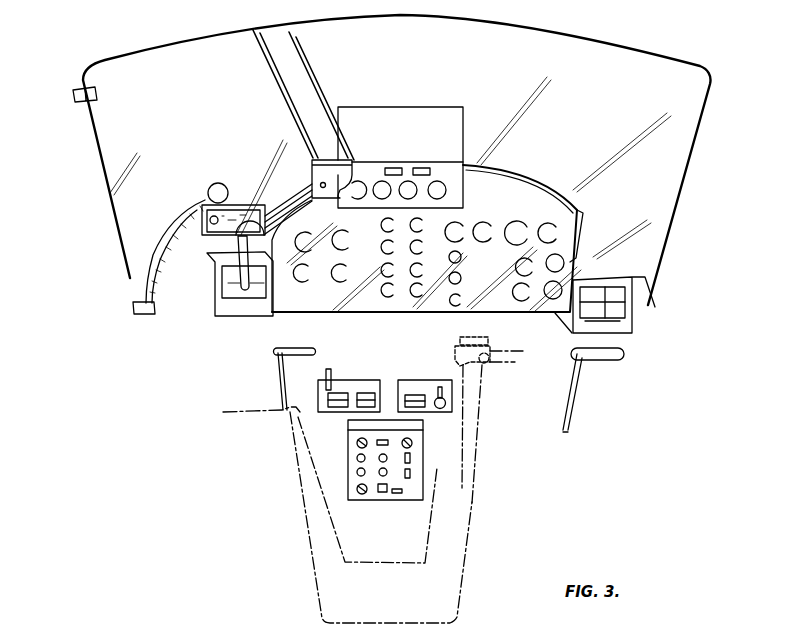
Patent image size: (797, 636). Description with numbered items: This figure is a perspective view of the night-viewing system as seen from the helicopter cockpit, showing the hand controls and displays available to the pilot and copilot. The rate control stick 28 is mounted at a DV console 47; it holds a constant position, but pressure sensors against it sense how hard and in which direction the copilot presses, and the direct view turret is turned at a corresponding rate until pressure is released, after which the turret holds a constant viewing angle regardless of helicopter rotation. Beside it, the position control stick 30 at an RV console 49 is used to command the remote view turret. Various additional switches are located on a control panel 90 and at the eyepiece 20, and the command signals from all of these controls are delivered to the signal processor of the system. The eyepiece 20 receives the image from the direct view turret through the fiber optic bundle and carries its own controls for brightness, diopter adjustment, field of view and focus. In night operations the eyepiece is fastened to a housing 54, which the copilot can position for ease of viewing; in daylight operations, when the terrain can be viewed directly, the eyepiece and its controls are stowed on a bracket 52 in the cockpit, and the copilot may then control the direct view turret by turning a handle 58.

The eyepiece 20 is at (172, 217).
The rate control stick 28 is at (330, 369).
The position control stick 30 is at (441, 386).
The DV console 47 is at (355, 382).
The RV console 49 is at (405, 383).
The bracket 52 is at (75, 100).
The housing 54 is at (211, 238).
The handle 58 is at (238, 268).
The control panel 90 is at (347, 477).